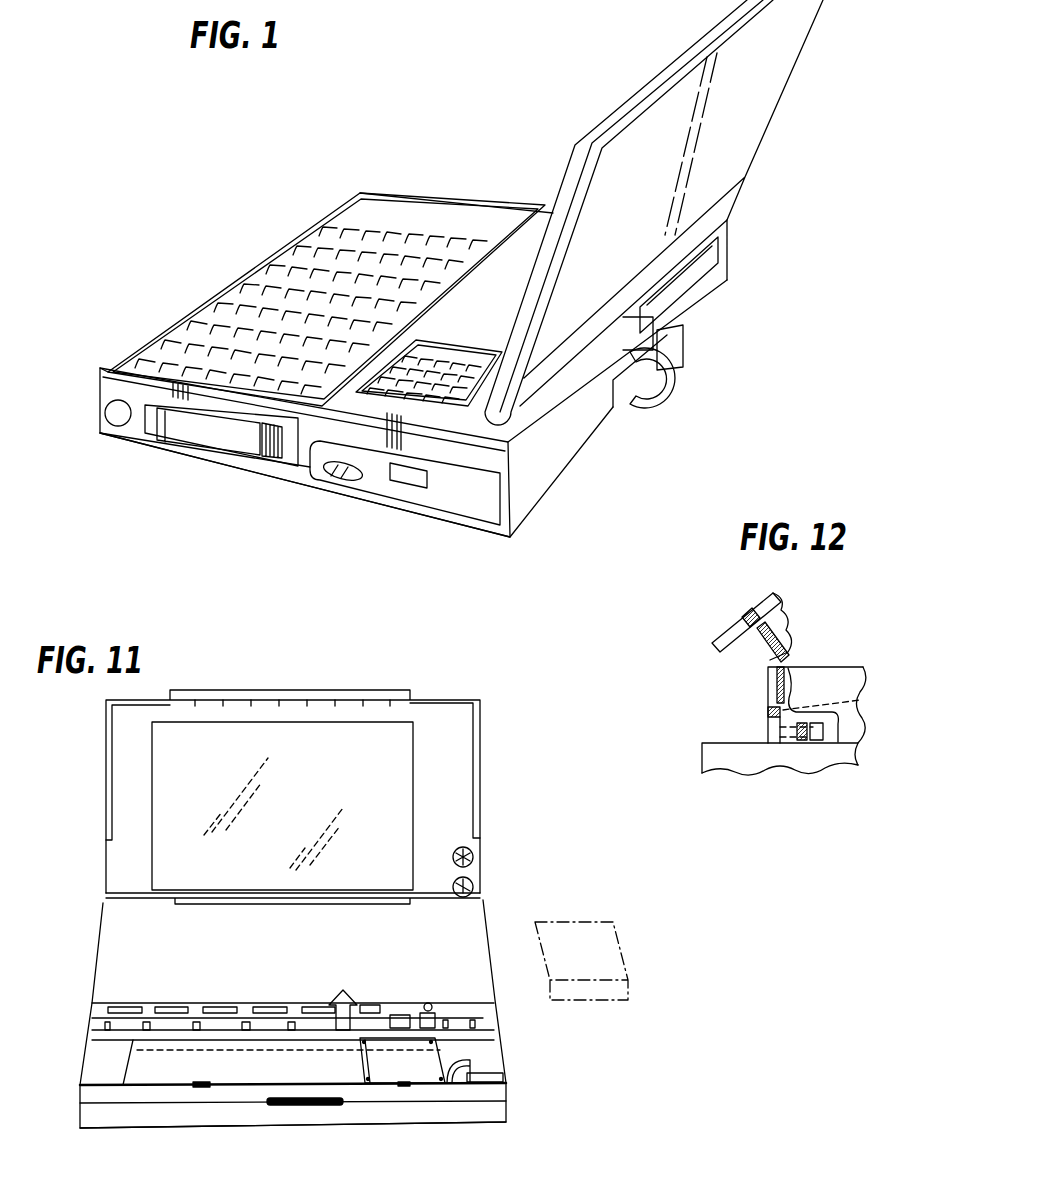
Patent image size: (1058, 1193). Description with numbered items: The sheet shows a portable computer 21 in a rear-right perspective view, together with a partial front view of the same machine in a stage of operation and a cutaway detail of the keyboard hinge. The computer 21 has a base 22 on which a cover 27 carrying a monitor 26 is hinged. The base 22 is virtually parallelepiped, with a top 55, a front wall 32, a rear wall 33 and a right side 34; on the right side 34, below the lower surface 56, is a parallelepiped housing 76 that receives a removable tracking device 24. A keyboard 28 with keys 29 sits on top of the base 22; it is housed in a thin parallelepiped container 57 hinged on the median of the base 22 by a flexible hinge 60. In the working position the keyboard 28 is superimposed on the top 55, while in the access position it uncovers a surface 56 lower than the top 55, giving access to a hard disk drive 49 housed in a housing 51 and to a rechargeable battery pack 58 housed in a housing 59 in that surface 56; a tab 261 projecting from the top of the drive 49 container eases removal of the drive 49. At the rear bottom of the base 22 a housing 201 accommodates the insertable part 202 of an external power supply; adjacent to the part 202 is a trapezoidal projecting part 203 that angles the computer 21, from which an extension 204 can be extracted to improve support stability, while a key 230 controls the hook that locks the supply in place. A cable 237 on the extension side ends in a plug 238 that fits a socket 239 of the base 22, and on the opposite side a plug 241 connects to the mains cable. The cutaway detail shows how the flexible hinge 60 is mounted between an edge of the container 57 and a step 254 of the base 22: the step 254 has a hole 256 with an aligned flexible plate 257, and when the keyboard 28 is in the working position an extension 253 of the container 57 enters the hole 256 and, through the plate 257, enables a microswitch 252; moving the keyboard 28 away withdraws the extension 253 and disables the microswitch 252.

In FIG. 1, the portable computer 21 is at (478, 156).
In FIG. 11, the portable computer 21 is at (495, 826).
In FIG. 1, the base 22 is at (98, 405).
In FIG. 12, the base 22 is at (745, 756).
In FIG. 11, the base 22 is at (508, 1110).
In FIG. 1, the removable tracking device 24 is at (193, 436).
In FIG. 11, the monitor 26 is at (391, 805).
In FIG. 1, the cover 27 is at (750, 106).
In FIG. 11, the cover 27 is at (127, 795).
In FIG. 1, the keyboard 28 is at (396, 193).
In FIG. 1, the keys 29 is at (327, 282).
In FIG. 11, the front wall 32 is at (356, 1115).
In FIG. 1, the rear wall 33 is at (718, 280).
In FIG. 1, the right side 34 is at (268, 448).
In FIG. 11, the hard disk drive 49 is at (427, 1057).
In FIG. 11, the housing 51 is at (427, 1073).
In FIG. 1, the top 55 is at (463, 418).
In FIG. 12, the top 55 is at (838, 668).
In FIG. 1, the surface 56 is at (298, 406).
In FIG. 12, the surface 56 is at (717, 743).
In FIG. 11, the surface 56 is at (105, 1065).
In FIG. 1, the container 57 is at (100, 375).
In FIG. 12, the container 57 is at (746, 618).
In FIG. 11, the rechargeable battery pack 58 is at (230, 1075).
In FIG. 11, the housing 59 is at (280, 1078).
In FIG. 12, the flexible hinge 60 is at (784, 662).
In FIG. 11, the flexible hinge 60 is at (248, 1007).
In FIG. 1, the parallelepiped housing 76 is at (148, 437).
In FIG. 1, the housing 201 is at (440, 468).
In FIG. 1, the insertable part 202 is at (368, 480).
In FIG. 1, the projecting part 203 is at (493, 518).
In FIG. 1, the extension 204 is at (677, 352).
In FIG. 1, the key 230 is at (400, 480).
In FIG. 1, the cable 237 is at (647, 404).
In FIG. 1, the plug 238 is at (675, 331).
In FIG. 1, the socket 239 is at (633, 337).
In FIG. 1, the plug 241 is at (333, 480).
In FIG. 12, the microswitch 252 is at (824, 733).
In FIG. 12, the extension 253 is at (720, 642).
In FIG. 11, the extension 253 is at (428, 1003).
In FIG. 12, the step 254 is at (846, 678).
In FIG. 12, the hole 256 is at (770, 725).
In FIG. 11, the hole 256 is at (430, 1013).
In FIG. 12, the flexible plate 257 is at (800, 742).
In FIG. 11, the tab 261 is at (400, 1015).